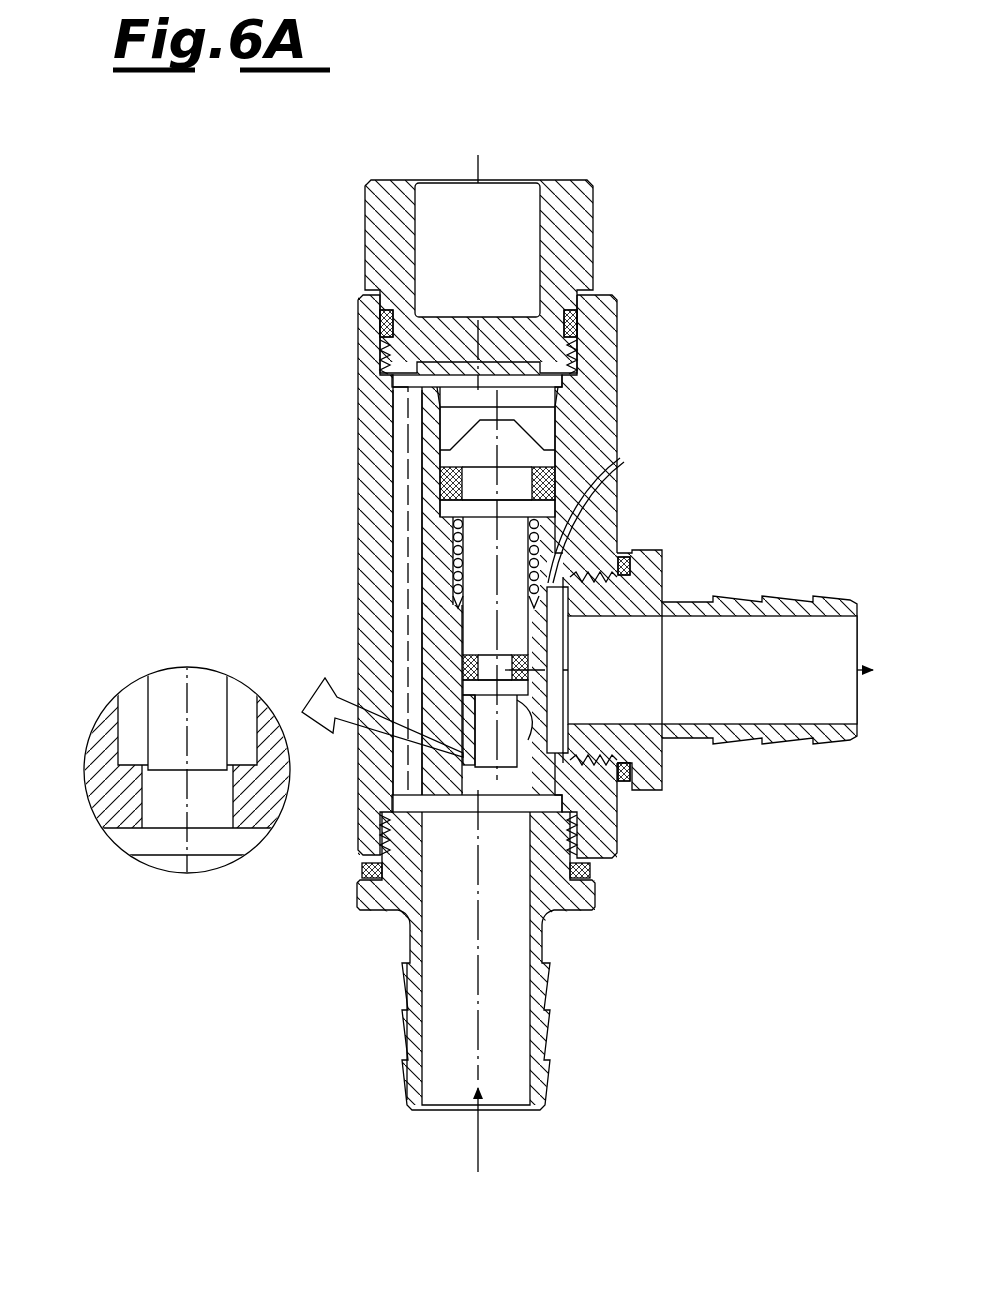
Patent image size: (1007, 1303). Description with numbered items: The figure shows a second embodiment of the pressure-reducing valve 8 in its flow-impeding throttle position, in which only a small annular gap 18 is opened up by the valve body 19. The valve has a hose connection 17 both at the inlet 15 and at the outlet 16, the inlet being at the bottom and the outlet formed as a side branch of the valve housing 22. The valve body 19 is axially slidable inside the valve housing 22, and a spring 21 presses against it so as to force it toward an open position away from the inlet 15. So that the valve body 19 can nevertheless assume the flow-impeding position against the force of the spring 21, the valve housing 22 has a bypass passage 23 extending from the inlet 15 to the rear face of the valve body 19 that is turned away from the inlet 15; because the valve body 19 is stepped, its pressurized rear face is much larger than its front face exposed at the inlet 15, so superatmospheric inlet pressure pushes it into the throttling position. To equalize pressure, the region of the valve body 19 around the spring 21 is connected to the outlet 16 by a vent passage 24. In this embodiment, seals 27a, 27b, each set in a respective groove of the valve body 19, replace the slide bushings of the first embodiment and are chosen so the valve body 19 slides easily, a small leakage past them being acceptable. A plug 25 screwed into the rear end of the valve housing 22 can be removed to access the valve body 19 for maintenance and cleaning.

The pressure-reducing valve 8 is at (655, 131).
The inlet 15 is at (366, 925).
The outlet 16 is at (648, 543).
The hose connection 17 is at (770, 733).
The annular gap 18 is at (457, 743).
The valve body 19 is at (442, 487).
The spring 21 is at (537, 542).
The valve housing 22 is at (607, 325).
The bypass passage 23 is at (403, 412).
The vent passage 24 is at (596, 511).
The plug 25 is at (562, 187).
The seal 27a is at (465, 668).
The seal 27b is at (480, 587).